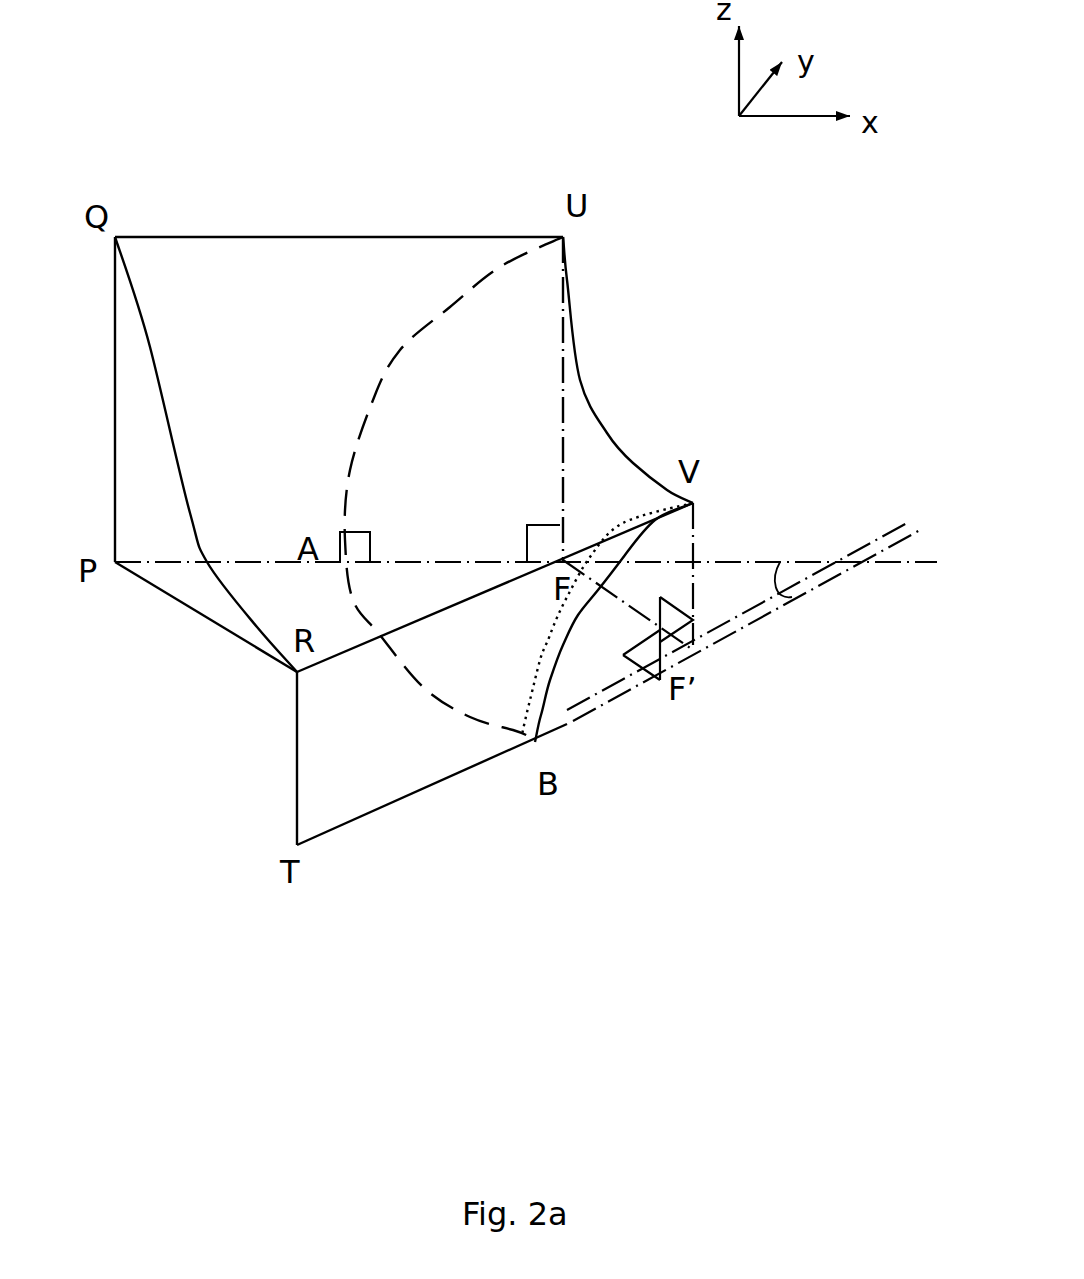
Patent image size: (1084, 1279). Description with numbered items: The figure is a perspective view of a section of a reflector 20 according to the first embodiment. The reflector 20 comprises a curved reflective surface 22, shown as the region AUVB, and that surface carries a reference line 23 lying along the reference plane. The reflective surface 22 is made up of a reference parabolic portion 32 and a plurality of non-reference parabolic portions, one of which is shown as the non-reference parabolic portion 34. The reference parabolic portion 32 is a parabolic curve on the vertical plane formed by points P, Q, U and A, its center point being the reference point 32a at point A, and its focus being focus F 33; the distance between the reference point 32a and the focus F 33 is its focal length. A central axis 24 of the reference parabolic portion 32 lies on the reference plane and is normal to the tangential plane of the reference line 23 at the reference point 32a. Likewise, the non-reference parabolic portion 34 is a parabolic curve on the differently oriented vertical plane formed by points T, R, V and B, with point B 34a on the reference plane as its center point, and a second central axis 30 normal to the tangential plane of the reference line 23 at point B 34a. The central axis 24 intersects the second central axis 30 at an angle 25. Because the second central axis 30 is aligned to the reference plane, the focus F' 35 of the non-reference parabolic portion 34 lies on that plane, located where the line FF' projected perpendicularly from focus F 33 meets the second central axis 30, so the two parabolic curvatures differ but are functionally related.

The reflector 20 is at (240, 668).
The curved reflective surface 22 is at (510, 315).
The reference line 23 is at (483, 717).
The central axis 24 is at (738, 562).
The angle 25 is at (800, 573).
The second central axis 30 is at (753, 607).
The reference parabolic portion 32 is at (427, 320).
The reference point 32a is at (337, 558).
The focus F 33 is at (572, 557).
The non-reference parabolic portion 34 is at (565, 655).
The point B 34a is at (517, 740).
The focus F' 35 is at (703, 662).